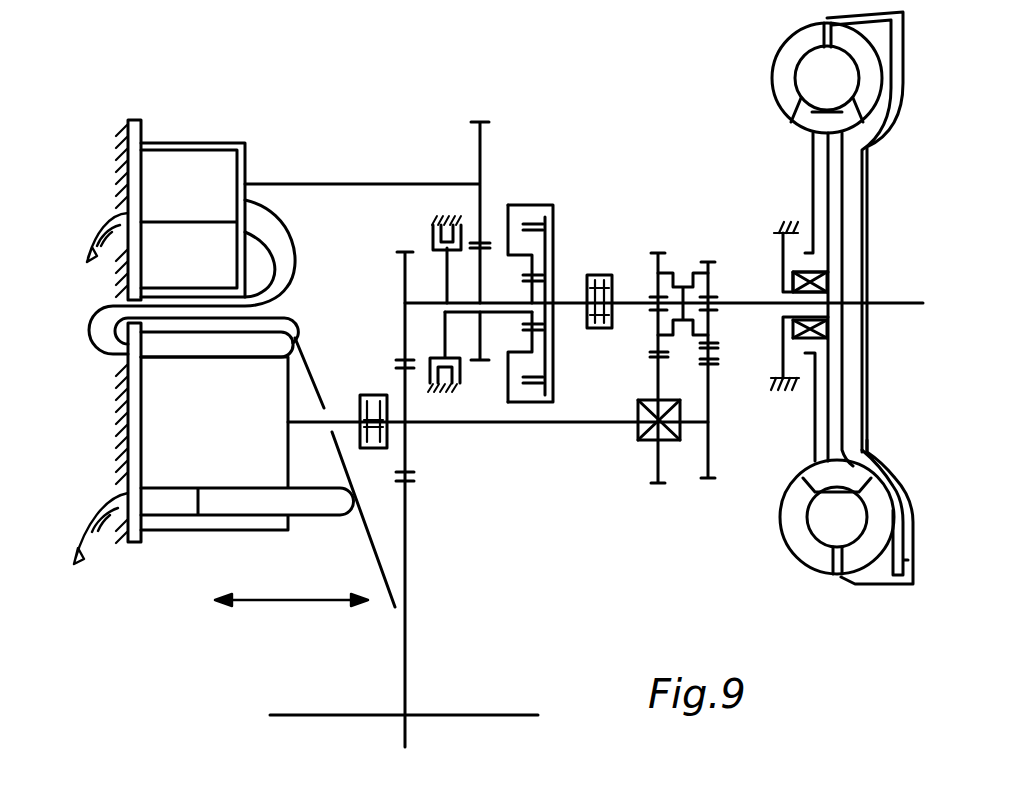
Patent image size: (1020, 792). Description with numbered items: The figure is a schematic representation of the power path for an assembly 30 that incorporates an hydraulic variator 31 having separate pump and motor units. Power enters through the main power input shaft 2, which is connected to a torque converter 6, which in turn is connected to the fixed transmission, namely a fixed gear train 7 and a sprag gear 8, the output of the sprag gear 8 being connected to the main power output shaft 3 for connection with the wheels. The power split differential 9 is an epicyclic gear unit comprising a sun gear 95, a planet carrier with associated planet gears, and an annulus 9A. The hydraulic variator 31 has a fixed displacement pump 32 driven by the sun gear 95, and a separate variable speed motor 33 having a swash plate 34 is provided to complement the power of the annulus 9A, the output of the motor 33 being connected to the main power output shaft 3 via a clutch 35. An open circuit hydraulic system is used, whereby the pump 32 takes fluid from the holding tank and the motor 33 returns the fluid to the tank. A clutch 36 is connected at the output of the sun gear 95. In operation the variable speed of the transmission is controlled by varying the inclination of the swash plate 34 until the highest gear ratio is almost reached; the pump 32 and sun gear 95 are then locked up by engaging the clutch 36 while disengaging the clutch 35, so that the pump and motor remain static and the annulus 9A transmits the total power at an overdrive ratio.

The main power input shaft 2 is at (890, 306).
The main power output shaft 3 is at (493, 713).
The torque converter 6 is at (748, 36).
The fixed gear train 7 is at (683, 266).
The sprag gear 8 is at (635, 432).
The power split differential 9 is at (566, 243).
The annulus 9A is at (557, 218).
The sun gear 95 is at (511, 300).
The assembly 30 is at (584, 160).
The hydraulic variator 31 is at (310, 93).
The fixed displacement pump 32 is at (192, 148).
The variable speed motor 33 is at (176, 472).
The swash plate 34 is at (373, 548).
The clutch 35 is at (373, 393).
The clutch 36 is at (432, 232).